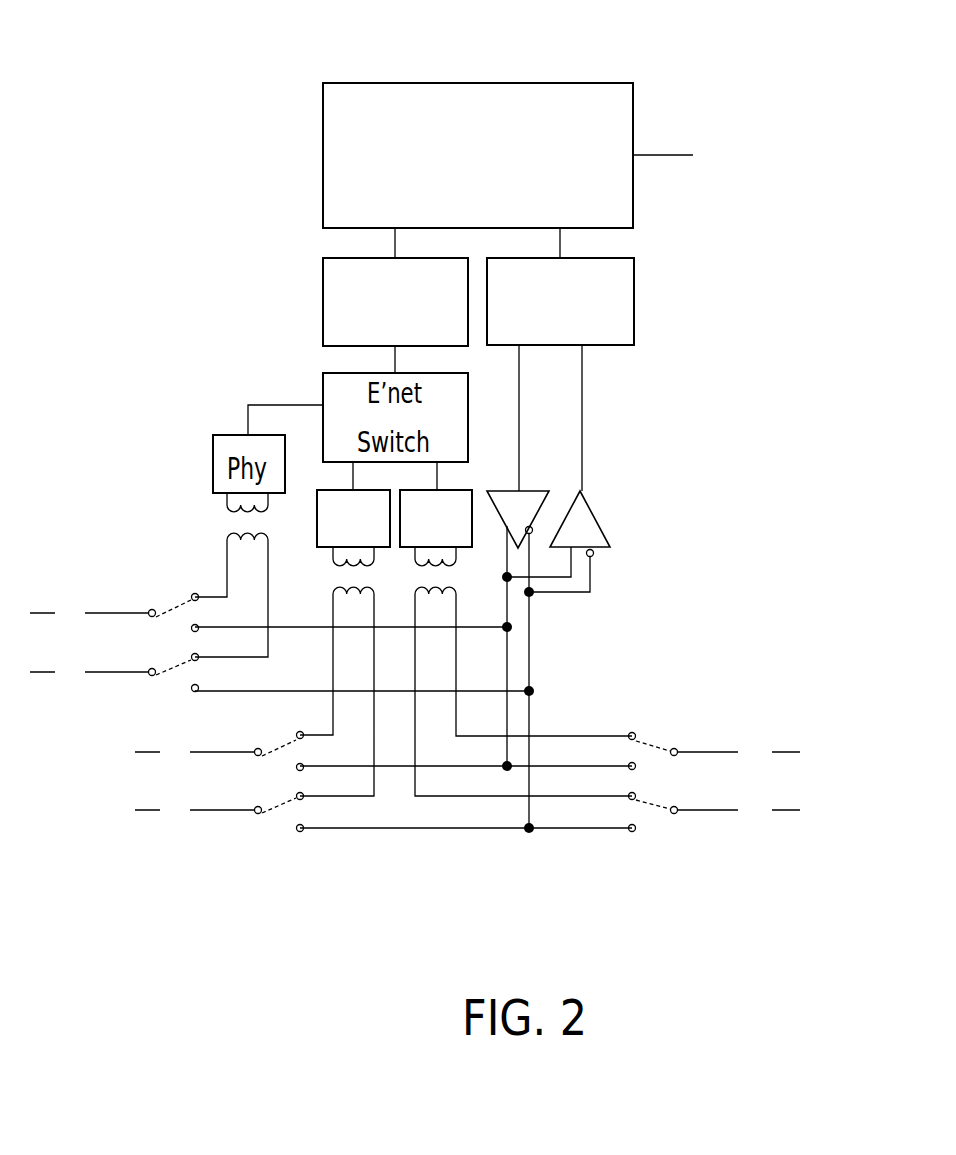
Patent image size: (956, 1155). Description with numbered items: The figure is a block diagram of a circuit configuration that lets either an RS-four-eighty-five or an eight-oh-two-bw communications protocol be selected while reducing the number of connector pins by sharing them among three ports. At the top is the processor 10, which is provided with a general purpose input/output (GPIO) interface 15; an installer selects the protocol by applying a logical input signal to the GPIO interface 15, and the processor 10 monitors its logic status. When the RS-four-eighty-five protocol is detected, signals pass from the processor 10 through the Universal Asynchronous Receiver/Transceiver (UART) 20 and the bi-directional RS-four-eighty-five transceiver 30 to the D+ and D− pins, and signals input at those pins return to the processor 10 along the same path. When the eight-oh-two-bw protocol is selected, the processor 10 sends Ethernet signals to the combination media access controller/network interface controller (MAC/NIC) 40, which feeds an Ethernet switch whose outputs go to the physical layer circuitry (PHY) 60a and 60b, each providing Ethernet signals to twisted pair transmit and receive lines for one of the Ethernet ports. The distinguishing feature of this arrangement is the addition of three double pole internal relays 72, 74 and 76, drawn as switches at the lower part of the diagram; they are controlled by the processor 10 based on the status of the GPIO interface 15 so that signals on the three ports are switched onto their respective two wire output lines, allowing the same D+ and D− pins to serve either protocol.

The processor 10 is at (499, 77).
The general purpose input/output (GPIO) interface 15 is at (660, 172).
The Universal Asynchronous Receiver/Transceiver (UART) 20 is at (650, 303).
The bi-directional RS-485 transceiver 30 is at (628, 518).
The media access controller/network interface controller (MAC/NIC) 40 is at (305, 292).
The physical layer circuitry (PHY) 60a is at (315, 527).
The physical layer circuitry (PHY) 60b is at (468, 490).
The internal relay 72 is at (162, 695).
The internal relay 74 is at (279, 830).
The internal relay 76 is at (653, 823).